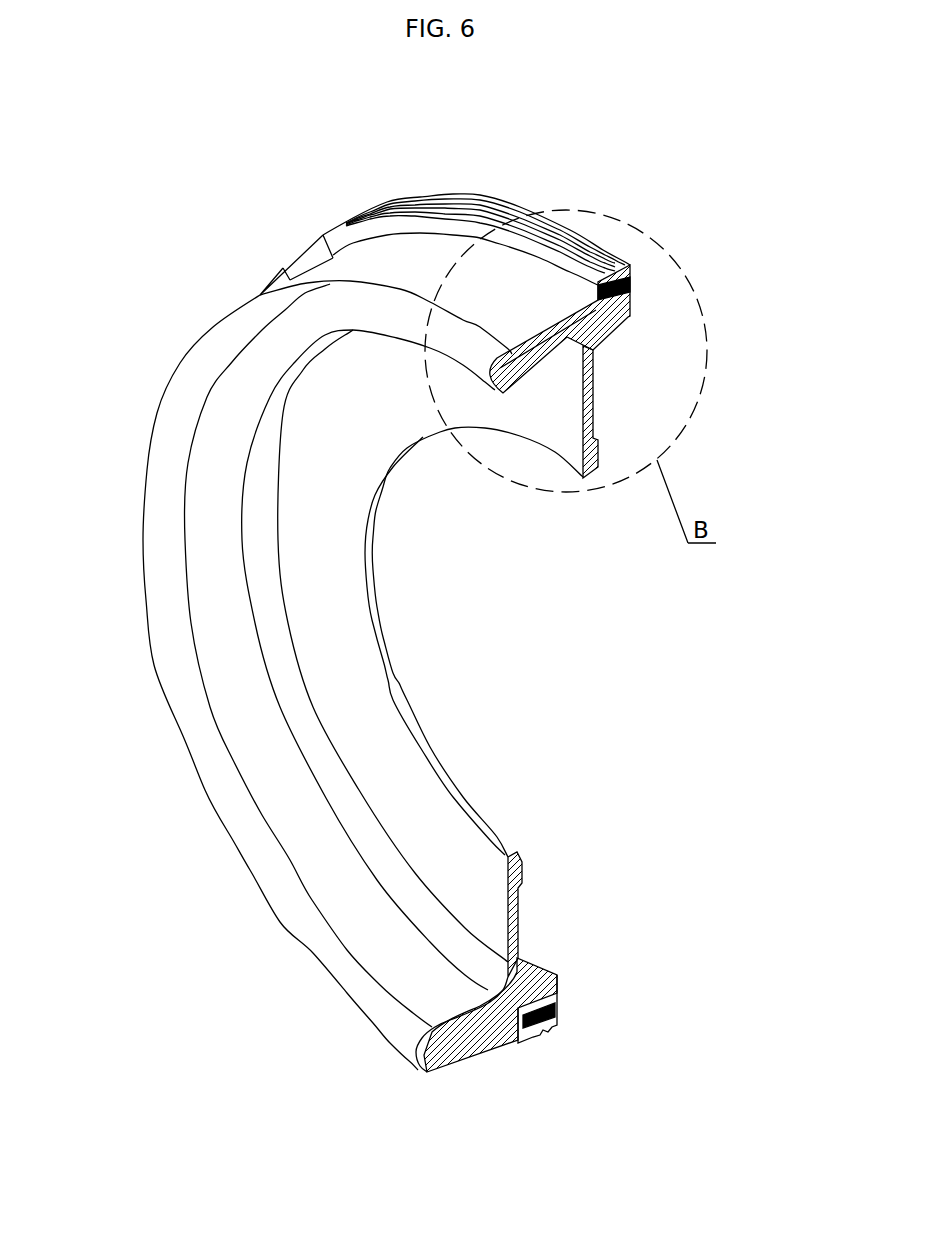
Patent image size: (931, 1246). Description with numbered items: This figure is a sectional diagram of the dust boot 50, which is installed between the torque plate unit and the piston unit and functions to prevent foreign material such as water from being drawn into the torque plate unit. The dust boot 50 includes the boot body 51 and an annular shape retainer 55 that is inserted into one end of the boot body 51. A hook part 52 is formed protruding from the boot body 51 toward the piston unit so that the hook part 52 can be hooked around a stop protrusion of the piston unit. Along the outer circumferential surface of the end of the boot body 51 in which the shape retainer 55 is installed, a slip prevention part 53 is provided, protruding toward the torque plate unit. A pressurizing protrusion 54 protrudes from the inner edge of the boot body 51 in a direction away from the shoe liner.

The dust boot 50 is at (680, 223).
The boot body 51 is at (245, 665).
The hook part 52 is at (627, 317).
The slip prevention part 53 is at (607, 270).
The pressurizing protrusion 54 is at (598, 447).
The shape retainer 55 is at (633, 297).